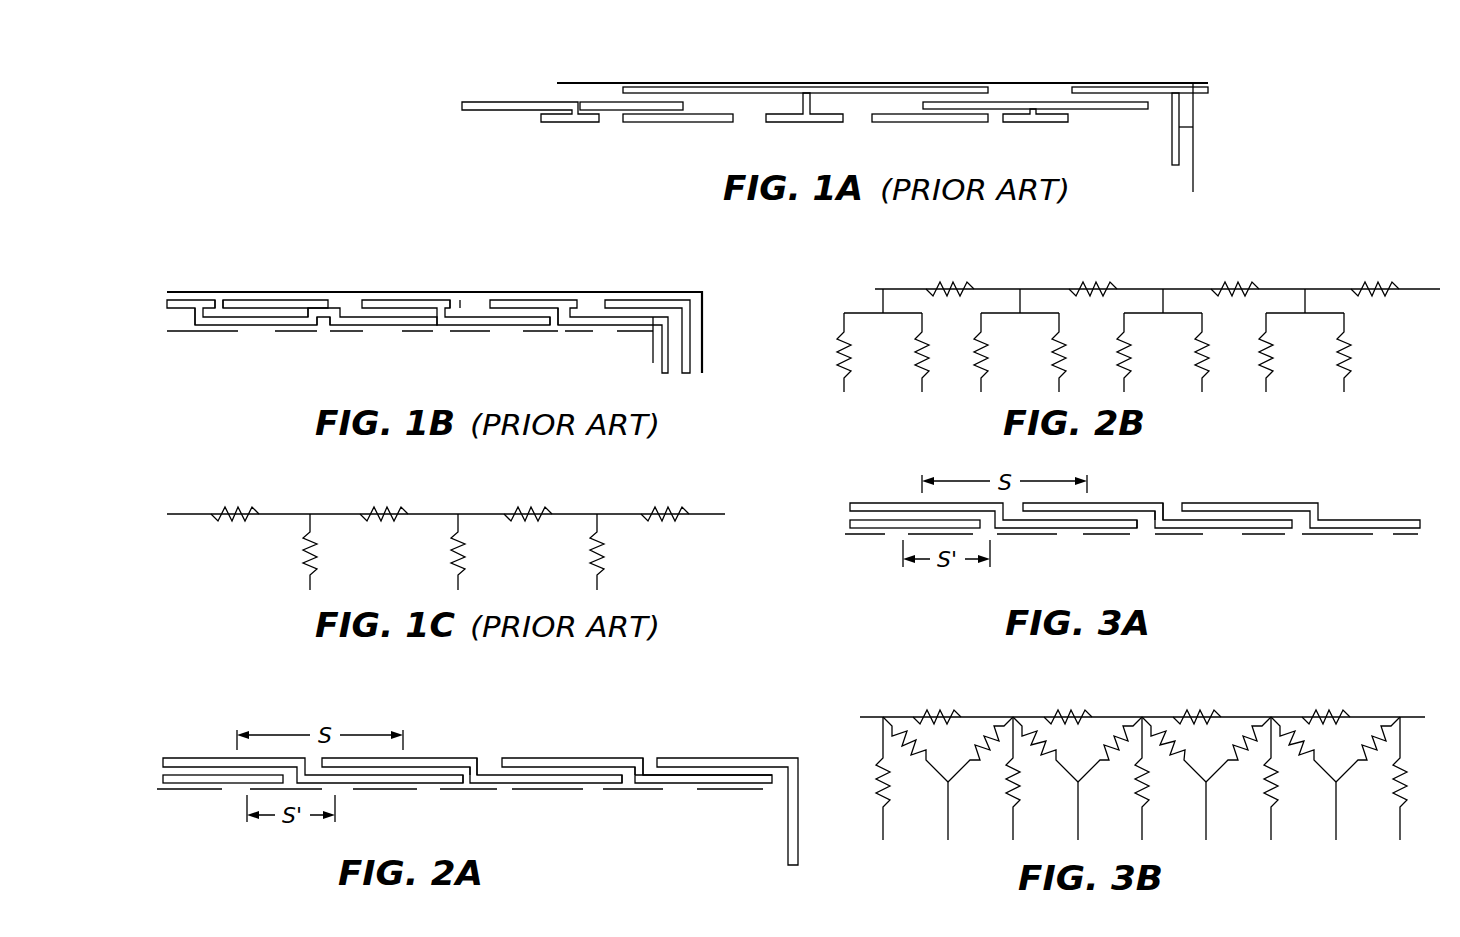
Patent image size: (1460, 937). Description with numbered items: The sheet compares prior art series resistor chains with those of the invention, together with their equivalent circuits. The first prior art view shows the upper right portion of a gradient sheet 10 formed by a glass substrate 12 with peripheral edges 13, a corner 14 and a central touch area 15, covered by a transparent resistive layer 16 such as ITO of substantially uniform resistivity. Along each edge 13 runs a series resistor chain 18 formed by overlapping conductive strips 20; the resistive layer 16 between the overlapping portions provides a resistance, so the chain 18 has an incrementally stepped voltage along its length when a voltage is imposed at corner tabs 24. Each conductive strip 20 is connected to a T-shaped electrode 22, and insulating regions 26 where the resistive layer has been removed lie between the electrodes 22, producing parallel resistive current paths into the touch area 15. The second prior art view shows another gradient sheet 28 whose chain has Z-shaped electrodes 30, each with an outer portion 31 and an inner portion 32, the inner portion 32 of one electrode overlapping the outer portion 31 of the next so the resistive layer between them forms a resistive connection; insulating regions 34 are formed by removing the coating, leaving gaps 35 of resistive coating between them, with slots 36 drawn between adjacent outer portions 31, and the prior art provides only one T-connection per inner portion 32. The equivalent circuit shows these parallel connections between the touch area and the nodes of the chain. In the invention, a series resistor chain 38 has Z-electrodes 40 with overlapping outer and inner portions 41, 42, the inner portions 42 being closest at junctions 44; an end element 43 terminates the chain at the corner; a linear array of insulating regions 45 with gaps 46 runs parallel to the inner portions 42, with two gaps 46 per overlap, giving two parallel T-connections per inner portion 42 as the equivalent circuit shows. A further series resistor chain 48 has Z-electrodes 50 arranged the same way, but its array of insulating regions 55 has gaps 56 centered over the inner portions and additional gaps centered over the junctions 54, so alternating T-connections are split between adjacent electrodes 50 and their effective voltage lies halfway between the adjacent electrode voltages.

In FIG. 1A, the gradient sheet 10 is at (733, 62).
In FIG. 1A, the glass substrate 12 is at (822, 86).
In FIG. 1A, the peripheral edges 13 is at (916, 83).
In FIG. 1A, the corner 14 is at (1196, 83).
In FIG. 1A, the central touch area 15 is at (993, 170).
In FIG. 1A, the transparent resistive layer 16 is at (1032, 88).
In FIG. 1A, the series resistor chain 18 is at (597, 97).
In FIG. 1A, the conductive strips 20 is at (520, 101).
In FIG. 1A, the T-shaped electrode 22 is at (805, 124).
In FIG. 1A, the corner tabs 24 is at (1194, 127).
In FIG. 1A, the insulating regions 26 is at (691, 124).
In FIG. 1B, the prior art folded antenna 28 is at (265, 291).
In FIG. 1B, the Z-shaped electrodes 30 is at (333, 298).
In FIG. 1B, the outer portion 31 is at (420, 292).
In FIG. 1B, the inner portion 32 is at (393, 333).
In FIG. 1B, the insulating regions 34 is at (703, 317).
In FIG. 1B, the gaps 35 is at (245, 333).
In FIG. 1B, the upper slot 36 is at (219, 298).
In FIG. 2A, the series resistor chain 38 is at (187, 753).
In FIG. 2A, the Z-electrodes 40 is at (439, 754).
In FIG. 2A, the outer portion 41 is at (555, 757).
In FIG. 2A, the inner portion 42 is at (583, 774).
In FIG. 2A, the end element 43 is at (725, 757).
In FIG. 2A, the junctions 44 is at (490, 772).
In FIG. 2A, the insulating regions 45 is at (470, 790).
In FIG. 2A, the gaps 46 is at (232, 791).
In FIG. 3A, the series resistor chain 48 is at (875, 499).
In FIG. 3A, the Z-electrodes 50 is at (1122, 499).
In FIG. 3A, the junctions 54 is at (1145, 530).
In FIG. 3A, the insulating regions 55 is at (1115, 540).
In FIG. 3A, the gaps 56 is at (890, 537).